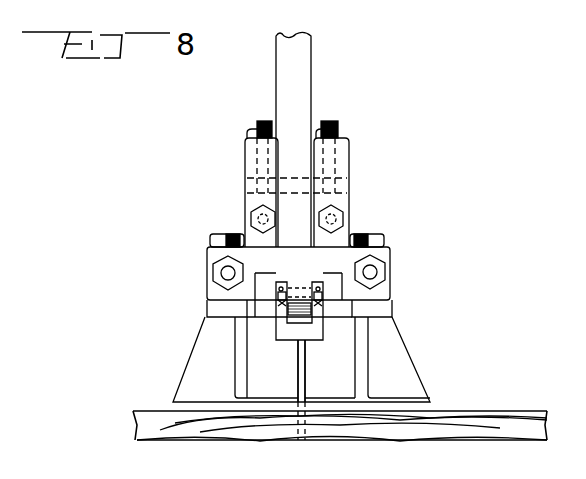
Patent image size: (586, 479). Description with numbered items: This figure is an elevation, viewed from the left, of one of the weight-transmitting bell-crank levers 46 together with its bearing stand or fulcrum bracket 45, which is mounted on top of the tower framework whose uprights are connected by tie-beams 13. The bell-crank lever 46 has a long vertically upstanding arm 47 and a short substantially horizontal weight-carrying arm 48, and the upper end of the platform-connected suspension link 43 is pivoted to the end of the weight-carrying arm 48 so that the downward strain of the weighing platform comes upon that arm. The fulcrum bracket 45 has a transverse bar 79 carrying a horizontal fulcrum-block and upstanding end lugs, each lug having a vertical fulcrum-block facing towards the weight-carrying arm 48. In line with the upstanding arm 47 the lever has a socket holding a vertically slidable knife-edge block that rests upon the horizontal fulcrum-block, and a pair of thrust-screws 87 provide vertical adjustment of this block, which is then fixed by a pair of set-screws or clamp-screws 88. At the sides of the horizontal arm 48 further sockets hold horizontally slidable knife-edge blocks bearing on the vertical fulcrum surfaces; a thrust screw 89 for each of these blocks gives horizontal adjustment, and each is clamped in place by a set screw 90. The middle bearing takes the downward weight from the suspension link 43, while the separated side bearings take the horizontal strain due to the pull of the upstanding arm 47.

The tie-beams 13 is at (150, 414).
The suspension link 43 is at (298, 388).
The bearing stand or fulcrum bracket 45 is at (403, 354).
The weight-transmitting bell-crank lever 46 is at (313, 202).
The upstanding arm 47 is at (305, 60).
The weight-carrying arm 48 is at (297, 312).
The transverse bar 79 is at (338, 312).
The thrust-screws 87 is at (259, 122).
The set-screws or clamp-screws 88 is at (250, 218).
The thrust screw 89 is at (222, 272).
The set screw 90 is at (214, 236).